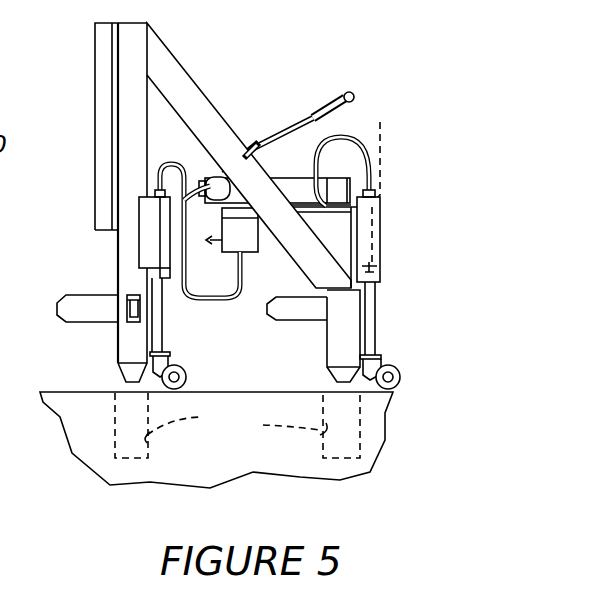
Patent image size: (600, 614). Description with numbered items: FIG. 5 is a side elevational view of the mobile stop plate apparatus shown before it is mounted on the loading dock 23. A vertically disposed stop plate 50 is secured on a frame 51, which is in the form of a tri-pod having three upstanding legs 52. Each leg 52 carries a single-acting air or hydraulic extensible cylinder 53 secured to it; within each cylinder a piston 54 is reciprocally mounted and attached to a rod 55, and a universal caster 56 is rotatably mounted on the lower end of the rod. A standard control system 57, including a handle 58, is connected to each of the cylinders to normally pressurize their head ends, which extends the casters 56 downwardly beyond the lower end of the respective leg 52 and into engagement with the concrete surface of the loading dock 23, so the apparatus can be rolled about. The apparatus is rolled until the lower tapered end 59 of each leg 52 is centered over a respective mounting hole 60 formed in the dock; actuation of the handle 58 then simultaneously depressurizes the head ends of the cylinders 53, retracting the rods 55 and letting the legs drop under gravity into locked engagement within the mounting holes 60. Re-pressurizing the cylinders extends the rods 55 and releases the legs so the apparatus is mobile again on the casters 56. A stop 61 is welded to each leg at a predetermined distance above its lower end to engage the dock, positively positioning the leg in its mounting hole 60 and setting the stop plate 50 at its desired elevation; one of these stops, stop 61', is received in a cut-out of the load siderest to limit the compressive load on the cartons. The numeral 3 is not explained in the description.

The frame 3 is at (7, 349).
The loading dock 23 is at (64, 389).
The stop plate 50 is at (103, 50).
The frame 51 is at (221, 95).
The leg 52 is at (128, 248).
The extensible cylinder 53 is at (134, 210).
The piston 54 is at (368, 185).
The rod 55 is at (155, 293).
The universal caster 56 is at (186, 369).
The control system 57 is at (279, 106).
The handle 58 is at (345, 93).
The lower tapered end 59 is at (133, 375).
The mounting hole 60 is at (237, 425).
The stop 61 is at (197, 328).
The stop 61' is at (62, 293).